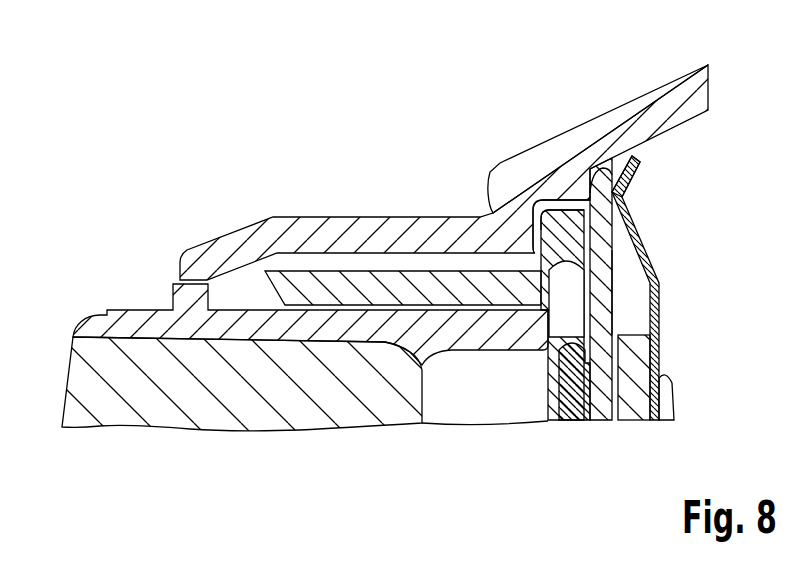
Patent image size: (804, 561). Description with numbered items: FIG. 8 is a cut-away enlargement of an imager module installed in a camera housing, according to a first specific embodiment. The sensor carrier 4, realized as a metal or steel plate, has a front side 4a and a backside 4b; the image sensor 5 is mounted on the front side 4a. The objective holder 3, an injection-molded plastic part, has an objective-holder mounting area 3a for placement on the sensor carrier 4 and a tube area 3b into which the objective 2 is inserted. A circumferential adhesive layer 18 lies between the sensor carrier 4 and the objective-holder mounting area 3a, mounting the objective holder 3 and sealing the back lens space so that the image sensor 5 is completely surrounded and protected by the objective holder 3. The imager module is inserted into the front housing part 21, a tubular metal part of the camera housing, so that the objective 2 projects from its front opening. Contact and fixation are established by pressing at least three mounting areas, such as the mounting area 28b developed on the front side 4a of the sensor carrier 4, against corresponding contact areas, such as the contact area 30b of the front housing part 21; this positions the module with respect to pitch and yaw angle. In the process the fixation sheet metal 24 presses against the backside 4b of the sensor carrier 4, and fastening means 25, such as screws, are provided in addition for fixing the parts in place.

The objective 2 is at (124, 318).
The front housing part 21 is at (296, 235).
The objective holder 3 is at (432, 288).
The objective-holder mounting area 3a is at (565, 212).
The tube area 3b is at (362, 288).
The adhesive layer 18 is at (548, 202).
The mounting area 28b is at (597, 181).
The contact area 30b is at (618, 152).
The sensor carrier 4 is at (600, 233).
The front side 4a is at (573, 420).
The backside 4b is at (614, 302).
The fixation sheet metal 24 is at (657, 270).
The fastening means 25 is at (674, 392).
The image sensor 5 is at (588, 405).